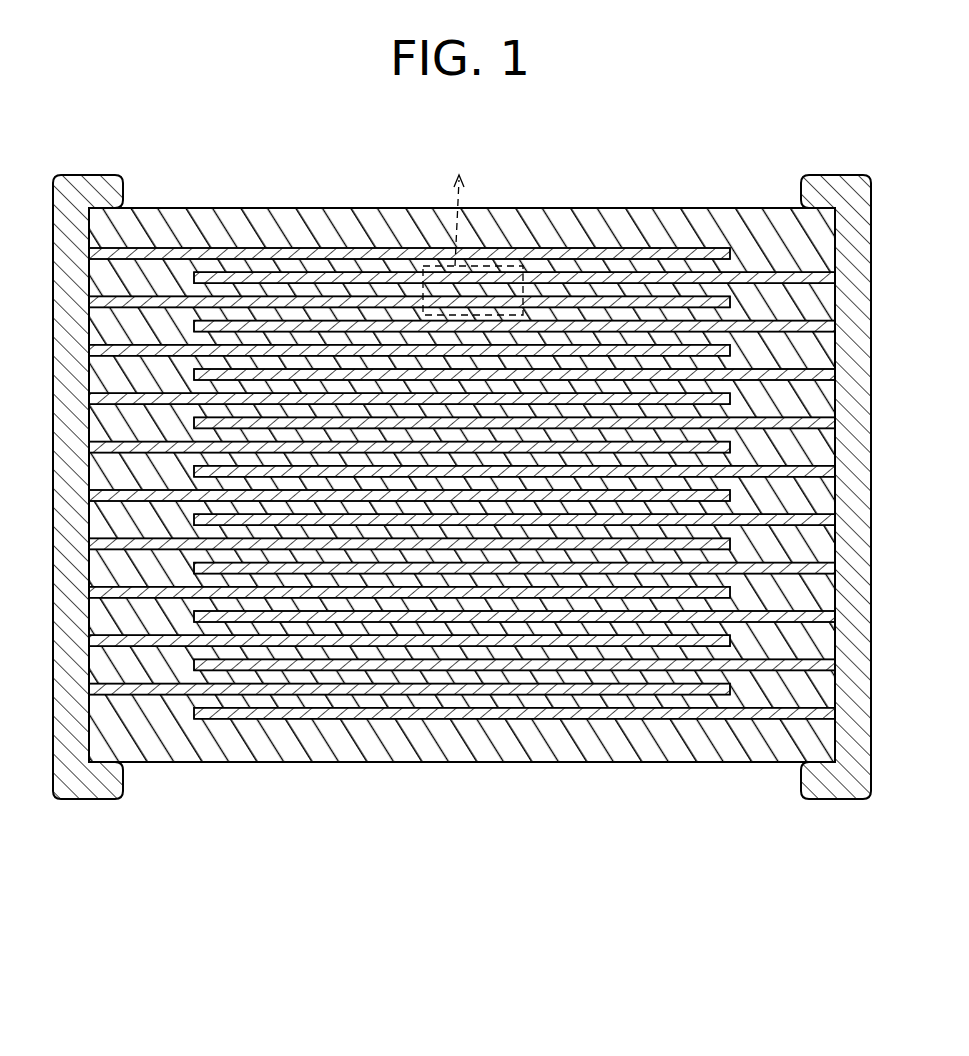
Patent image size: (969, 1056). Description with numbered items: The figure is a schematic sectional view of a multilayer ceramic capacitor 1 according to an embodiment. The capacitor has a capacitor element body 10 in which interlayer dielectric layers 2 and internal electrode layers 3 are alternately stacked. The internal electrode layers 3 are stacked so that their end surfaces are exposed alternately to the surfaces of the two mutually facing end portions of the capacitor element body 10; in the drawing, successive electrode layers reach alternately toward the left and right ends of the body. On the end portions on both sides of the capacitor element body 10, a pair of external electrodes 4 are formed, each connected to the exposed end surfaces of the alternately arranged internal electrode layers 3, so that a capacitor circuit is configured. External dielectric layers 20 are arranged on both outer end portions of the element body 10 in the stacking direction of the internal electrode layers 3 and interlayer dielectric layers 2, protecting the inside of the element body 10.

The multilayer ceramic capacitor 1 is at (462, 516).
The interlayer dielectric layers 2 is at (339, 270).
The internal electrode layers 3 is at (563, 253).
The external electrodes 4 is at (835, 186).
The capacitor element body 10 is at (462, 503).
The external dielectric layers 20 is at (653, 232).